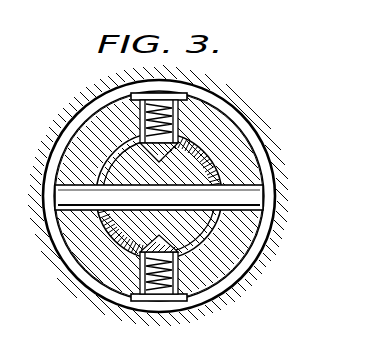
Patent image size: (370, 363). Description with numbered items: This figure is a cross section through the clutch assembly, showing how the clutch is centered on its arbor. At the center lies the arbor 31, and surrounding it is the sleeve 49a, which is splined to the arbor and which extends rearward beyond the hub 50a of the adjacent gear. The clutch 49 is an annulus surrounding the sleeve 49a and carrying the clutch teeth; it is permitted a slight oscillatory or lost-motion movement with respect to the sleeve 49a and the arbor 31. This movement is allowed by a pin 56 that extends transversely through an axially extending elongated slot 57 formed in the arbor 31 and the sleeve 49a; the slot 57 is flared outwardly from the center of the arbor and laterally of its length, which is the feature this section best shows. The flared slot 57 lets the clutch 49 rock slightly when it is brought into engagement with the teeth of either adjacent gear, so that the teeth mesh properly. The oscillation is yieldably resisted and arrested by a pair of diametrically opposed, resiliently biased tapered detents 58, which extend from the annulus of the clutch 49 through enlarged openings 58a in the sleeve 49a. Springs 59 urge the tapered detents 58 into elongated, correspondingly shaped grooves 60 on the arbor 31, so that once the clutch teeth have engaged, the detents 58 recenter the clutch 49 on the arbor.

The arbor 31 is at (268, 228).
The clutch 49 is at (262, 168).
The sleeve 49a is at (258, 150).
The hub 50a is at (275, 176).
The pin 56 is at (266, 197).
The elongated slot 57 is at (266, 208).
The tapered detents 58 is at (150, 257).
The enlarged openings 58a is at (192, 283).
The springs 59 is at (155, 277).
The grooves 60 is at (226, 280).